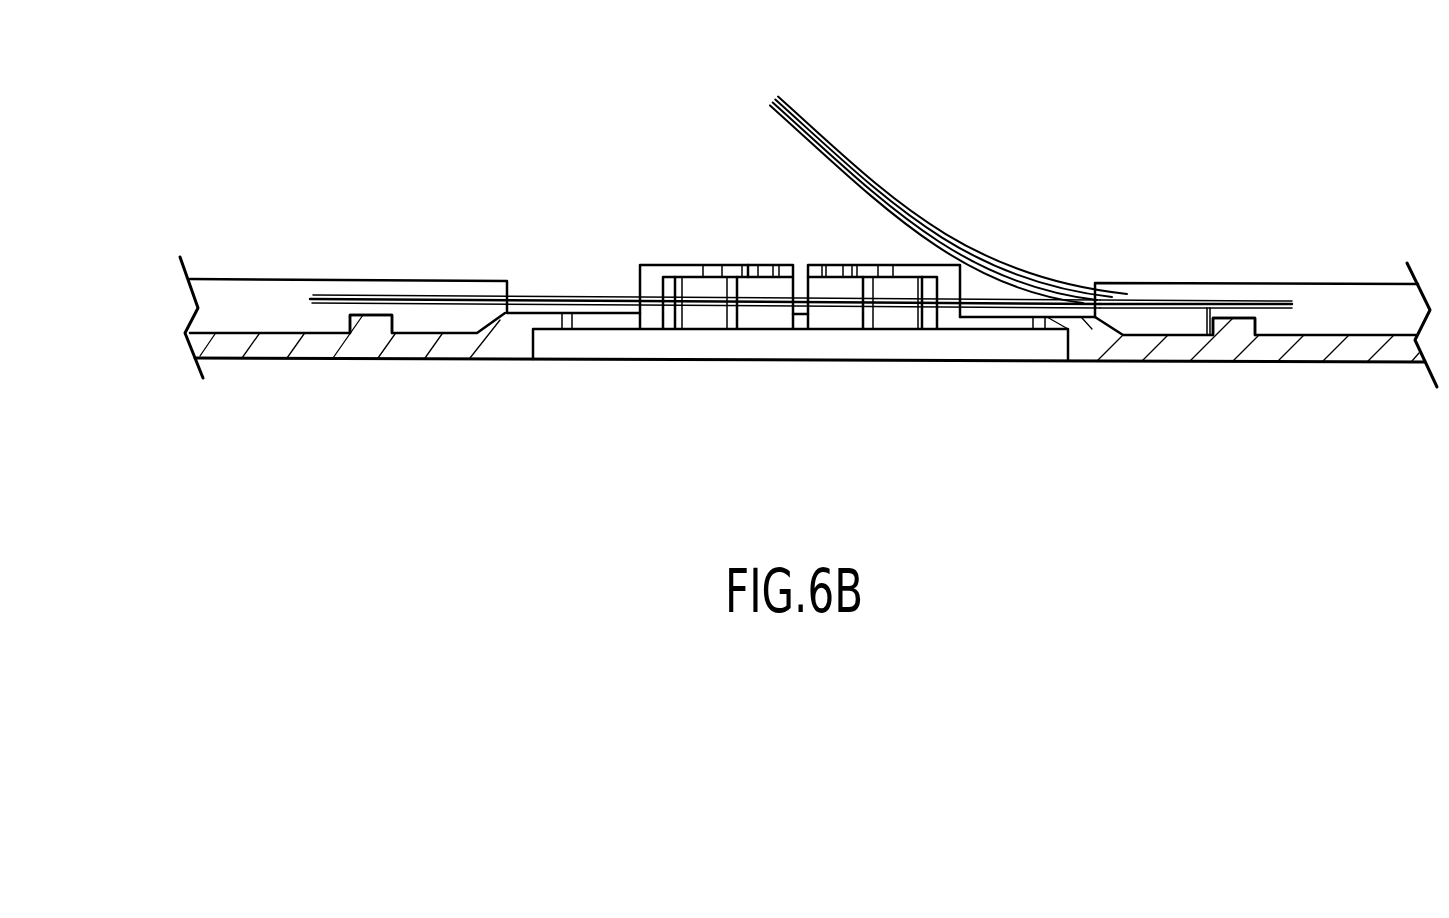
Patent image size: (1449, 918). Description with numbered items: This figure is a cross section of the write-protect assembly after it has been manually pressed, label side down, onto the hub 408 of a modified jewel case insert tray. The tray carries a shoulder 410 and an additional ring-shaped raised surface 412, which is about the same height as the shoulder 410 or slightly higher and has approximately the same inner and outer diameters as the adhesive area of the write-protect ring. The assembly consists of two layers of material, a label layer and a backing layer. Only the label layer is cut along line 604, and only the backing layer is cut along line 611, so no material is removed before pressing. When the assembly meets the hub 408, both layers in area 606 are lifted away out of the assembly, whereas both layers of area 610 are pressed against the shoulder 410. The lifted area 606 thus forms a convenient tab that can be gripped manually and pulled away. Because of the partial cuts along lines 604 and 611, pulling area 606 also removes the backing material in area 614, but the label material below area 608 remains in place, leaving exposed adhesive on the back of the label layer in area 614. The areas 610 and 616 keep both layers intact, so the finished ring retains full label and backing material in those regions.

The hub 408 is at (885, 267).
The shoulder 410 is at (1082, 318).
The ring-shaped raised surface 412 is at (358, 323).
The cut line through label layer 604 is at (1210, 330).
The lifted area 606 is at (822, 138).
The label material area 608 is at (313, 297).
The intact area pressed against shoulder 610 is at (523, 295).
The cut line through backing layer 611 is at (1260, 300).
The backing material area 614 is at (380, 296).
The intact area 616 is at (323, 295).